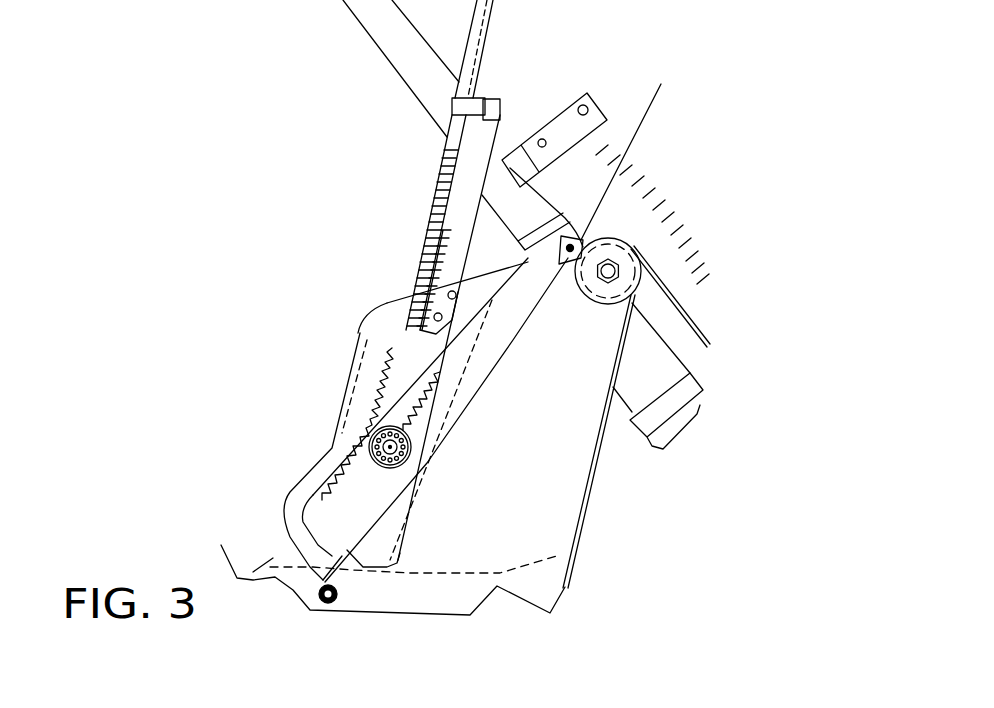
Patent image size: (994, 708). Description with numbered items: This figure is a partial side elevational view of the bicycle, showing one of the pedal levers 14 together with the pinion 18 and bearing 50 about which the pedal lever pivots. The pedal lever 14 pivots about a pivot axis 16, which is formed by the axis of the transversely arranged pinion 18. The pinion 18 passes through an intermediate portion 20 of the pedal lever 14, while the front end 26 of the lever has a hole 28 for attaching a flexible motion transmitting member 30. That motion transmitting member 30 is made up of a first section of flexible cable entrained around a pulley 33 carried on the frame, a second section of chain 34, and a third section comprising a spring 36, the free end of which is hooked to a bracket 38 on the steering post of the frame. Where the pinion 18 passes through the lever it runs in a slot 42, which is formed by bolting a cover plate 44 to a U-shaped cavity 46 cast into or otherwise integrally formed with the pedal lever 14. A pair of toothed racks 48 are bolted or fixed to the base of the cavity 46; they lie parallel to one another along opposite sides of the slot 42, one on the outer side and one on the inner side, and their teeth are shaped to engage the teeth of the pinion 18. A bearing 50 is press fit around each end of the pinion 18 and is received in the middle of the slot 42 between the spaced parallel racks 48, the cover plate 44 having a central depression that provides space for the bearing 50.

The pedal lever 14 is at (282, 562).
The pivot axis 16 is at (393, 449).
The pinion 18 is at (392, 447).
The intermediate portion 20 is at (346, 395).
The front end 26 is at (492, 342).
The hole 28 is at (630, 159).
The flexible motion transmitting member 30 is at (700, 287).
The pulley 33 is at (620, 288).
The chain 34 is at (712, 344).
The spring 36 is at (672, 238).
The bracket 38 is at (555, 128).
The slot 42 is at (362, 513).
The cover plate 44 is at (363, 452).
The U-shaped cavity 46 is at (322, 480).
The toothed rack 48 is at (352, 492).
The bearing 50 is at (397, 427).